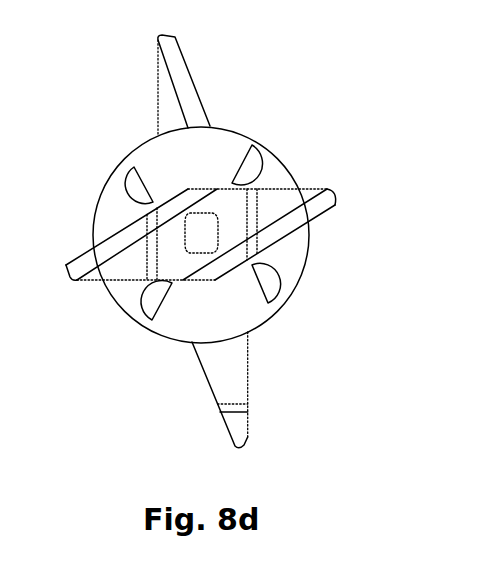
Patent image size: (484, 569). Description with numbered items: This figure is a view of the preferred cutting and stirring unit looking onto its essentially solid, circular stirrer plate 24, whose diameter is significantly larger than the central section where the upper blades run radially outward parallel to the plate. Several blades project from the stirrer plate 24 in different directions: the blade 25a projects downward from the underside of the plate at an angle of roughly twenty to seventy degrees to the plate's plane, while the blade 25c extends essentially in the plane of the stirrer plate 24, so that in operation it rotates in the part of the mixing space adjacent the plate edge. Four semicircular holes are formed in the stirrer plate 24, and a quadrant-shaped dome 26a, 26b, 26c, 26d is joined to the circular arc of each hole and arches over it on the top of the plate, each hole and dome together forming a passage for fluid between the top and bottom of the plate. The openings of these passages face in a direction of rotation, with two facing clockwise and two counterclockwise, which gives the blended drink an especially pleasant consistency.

The stirrer plate 24 is at (325, 247).
The blade 25a is at (192, 70).
The blade 25c is at (252, 412).
The quadrant-shaped dome 26a is at (262, 142).
The quadrant-shaped dome 26b is at (117, 163).
The quadrant-shaped dome 26c is at (138, 328).
The quadrant-shaped dome 26d is at (280, 308).